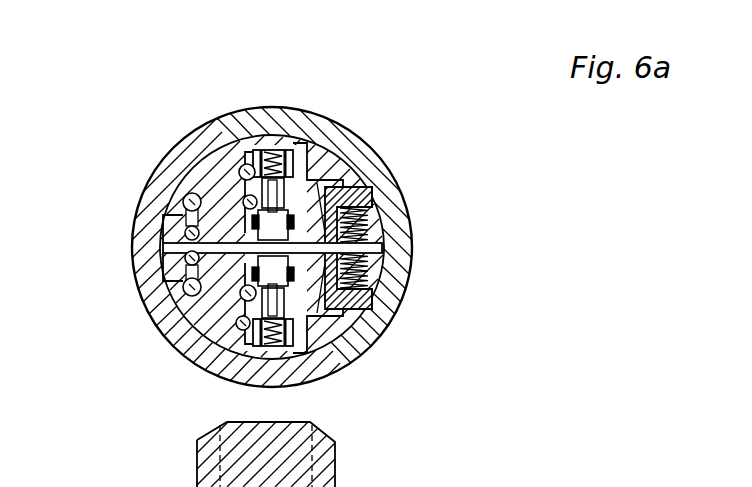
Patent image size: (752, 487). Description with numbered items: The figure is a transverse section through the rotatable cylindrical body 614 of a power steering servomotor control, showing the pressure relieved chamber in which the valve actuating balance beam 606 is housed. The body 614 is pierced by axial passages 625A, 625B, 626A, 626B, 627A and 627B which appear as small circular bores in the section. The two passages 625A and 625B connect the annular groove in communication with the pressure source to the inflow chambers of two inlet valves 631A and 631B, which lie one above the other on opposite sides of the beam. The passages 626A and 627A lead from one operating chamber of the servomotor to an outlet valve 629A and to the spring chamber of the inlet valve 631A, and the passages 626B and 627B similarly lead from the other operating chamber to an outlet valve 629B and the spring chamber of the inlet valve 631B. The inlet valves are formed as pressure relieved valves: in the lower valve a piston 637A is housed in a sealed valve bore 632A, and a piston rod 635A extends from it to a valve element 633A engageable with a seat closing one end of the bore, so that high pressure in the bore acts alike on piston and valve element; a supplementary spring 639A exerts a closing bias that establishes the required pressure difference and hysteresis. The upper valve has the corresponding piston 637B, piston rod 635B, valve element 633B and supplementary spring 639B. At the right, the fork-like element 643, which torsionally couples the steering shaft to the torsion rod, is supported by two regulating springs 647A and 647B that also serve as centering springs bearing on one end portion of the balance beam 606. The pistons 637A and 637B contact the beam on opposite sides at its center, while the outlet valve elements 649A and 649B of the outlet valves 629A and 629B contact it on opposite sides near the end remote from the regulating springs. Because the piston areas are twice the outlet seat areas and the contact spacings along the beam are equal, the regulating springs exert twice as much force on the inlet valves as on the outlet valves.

The valve actuating balance beam 606 is at (215, 240).
The cylindrical body 614 is at (86, 486).
The axial passage 625A is at (235, 290).
The axial passage 625B is at (243, 166).
The axial passage 626A is at (190, 194).
The axial passage 626B is at (192, 288).
The axial passage 627A is at (248, 312).
The axial passage 627B is at (218, 200).
The outlet valve 629A is at (163, 190).
The outlet valve 629B is at (165, 300).
The inlet valve 631A is at (335, 347).
The inlet valve 631B is at (307, 145).
The valve bore 632A is at (368, 338).
The valve element 633A is at (258, 322).
The valve element 633B is at (266, 176).
The piston rod 635A is at (355, 320).
The piston rod 635B is at (372, 187).
The piston 637A is at (350, 292).
The piston 637B is at (345, 187).
The supplementary spring 639A is at (265, 340).
The supplementary spring 639B is at (273, 150).
The fork-like element 643 is at (395, 177).
The regulating spring 647A is at (362, 226).
The regulating spring 647B is at (362, 269).
The outlet valve element 649A is at (165, 222).
The outlet valve element 649B is at (165, 268).